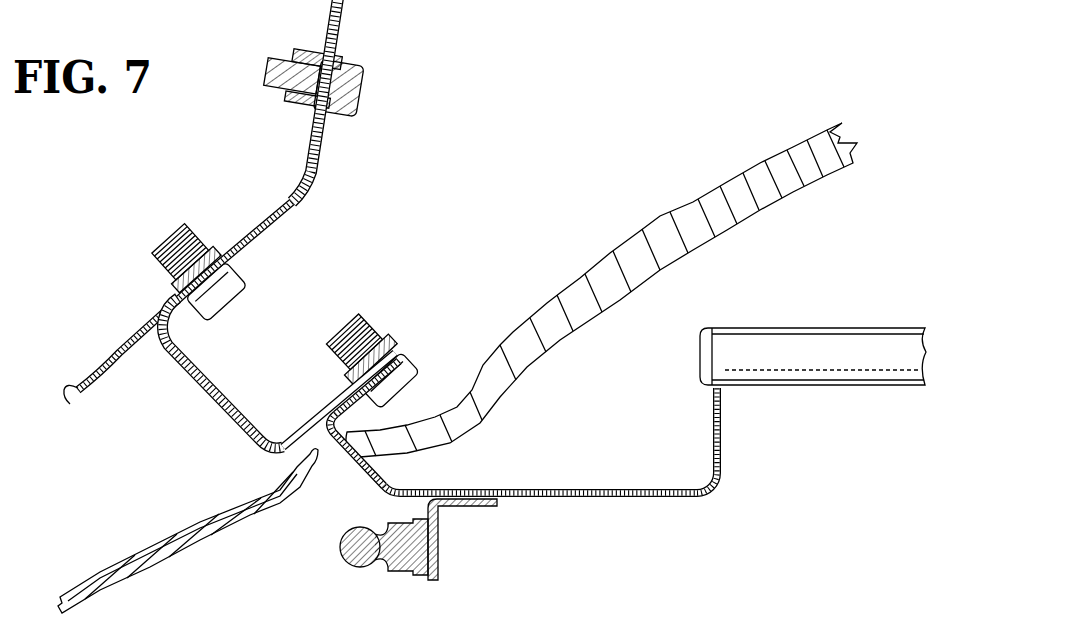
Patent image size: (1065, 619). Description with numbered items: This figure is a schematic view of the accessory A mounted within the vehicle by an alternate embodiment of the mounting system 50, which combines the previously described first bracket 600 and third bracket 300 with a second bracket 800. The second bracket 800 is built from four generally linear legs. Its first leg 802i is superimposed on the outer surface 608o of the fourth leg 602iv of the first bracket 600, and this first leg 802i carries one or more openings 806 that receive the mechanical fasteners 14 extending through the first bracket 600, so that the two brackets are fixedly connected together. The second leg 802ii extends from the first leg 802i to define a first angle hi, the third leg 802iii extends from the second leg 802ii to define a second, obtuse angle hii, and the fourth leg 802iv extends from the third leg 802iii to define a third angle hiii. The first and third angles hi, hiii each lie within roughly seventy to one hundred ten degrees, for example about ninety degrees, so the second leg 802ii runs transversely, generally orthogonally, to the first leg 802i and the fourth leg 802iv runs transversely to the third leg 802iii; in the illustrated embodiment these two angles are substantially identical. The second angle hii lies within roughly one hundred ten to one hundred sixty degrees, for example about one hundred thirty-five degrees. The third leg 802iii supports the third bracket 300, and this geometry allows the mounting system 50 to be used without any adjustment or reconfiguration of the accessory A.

The mounting system 50 is at (614, 61).
The first bracket 600 is at (431, 186).
The openings 806 is at (388, 341).
The mechanical fasteners 14 is at (414, 368).
The first leg 802i is at (352, 409).
The second leg 802ii is at (357, 491).
The third leg 802iii is at (582, 500).
The fourth leg 802iv is at (725, 453).
The second bracket 800 is at (569, 469).
The fourth leg of the first bracket 602iv is at (290, 430).
The outer surface 608o is at (357, 490).
The first angle hi is at (365, 455).
The second angle hii is at (397, 490).
The third angle hiii is at (683, 486).
The third bracket 300 is at (484, 541).
The accessory A is at (824, 327).